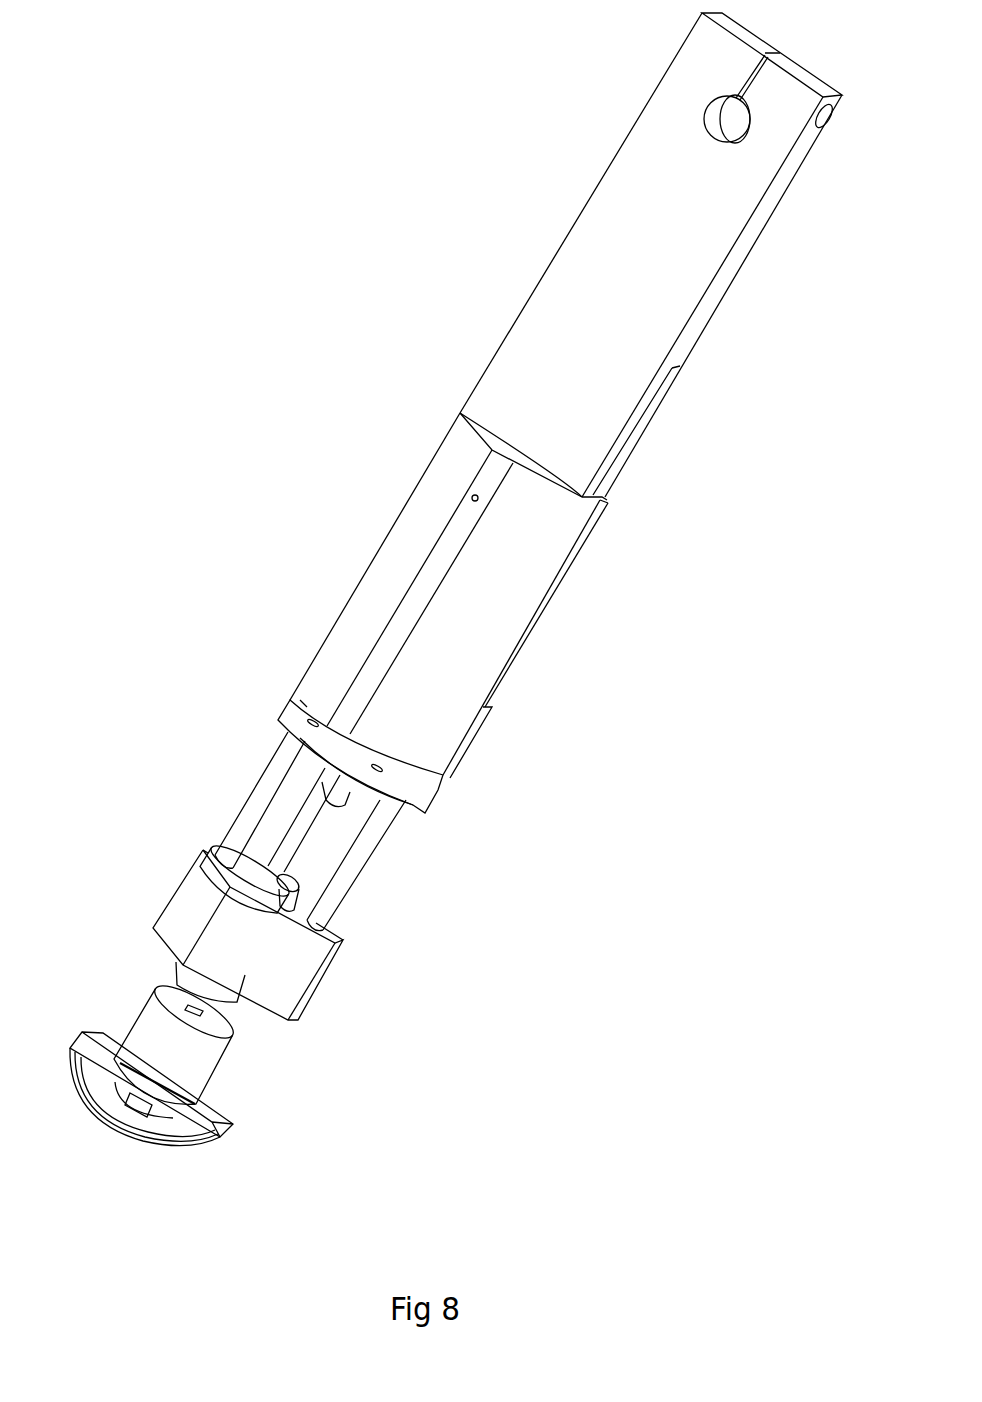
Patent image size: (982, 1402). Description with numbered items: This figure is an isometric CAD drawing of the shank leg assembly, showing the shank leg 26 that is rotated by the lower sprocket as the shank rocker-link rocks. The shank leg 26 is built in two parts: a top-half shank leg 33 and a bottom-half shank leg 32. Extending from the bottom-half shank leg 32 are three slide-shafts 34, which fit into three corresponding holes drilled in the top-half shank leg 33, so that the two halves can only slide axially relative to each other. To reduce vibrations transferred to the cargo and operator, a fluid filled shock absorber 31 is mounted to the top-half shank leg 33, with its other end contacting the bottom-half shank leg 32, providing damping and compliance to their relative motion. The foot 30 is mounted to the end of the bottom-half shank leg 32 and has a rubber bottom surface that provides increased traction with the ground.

The shank leg 26 is at (750, 557).
The foot 30 is at (229, 1135).
The shock absorber 31 is at (346, 799).
The bottom-half shank leg 32 is at (325, 979).
The top-half shank leg 33 is at (577, 546).
The slide-shafts 34 is at (232, 823).